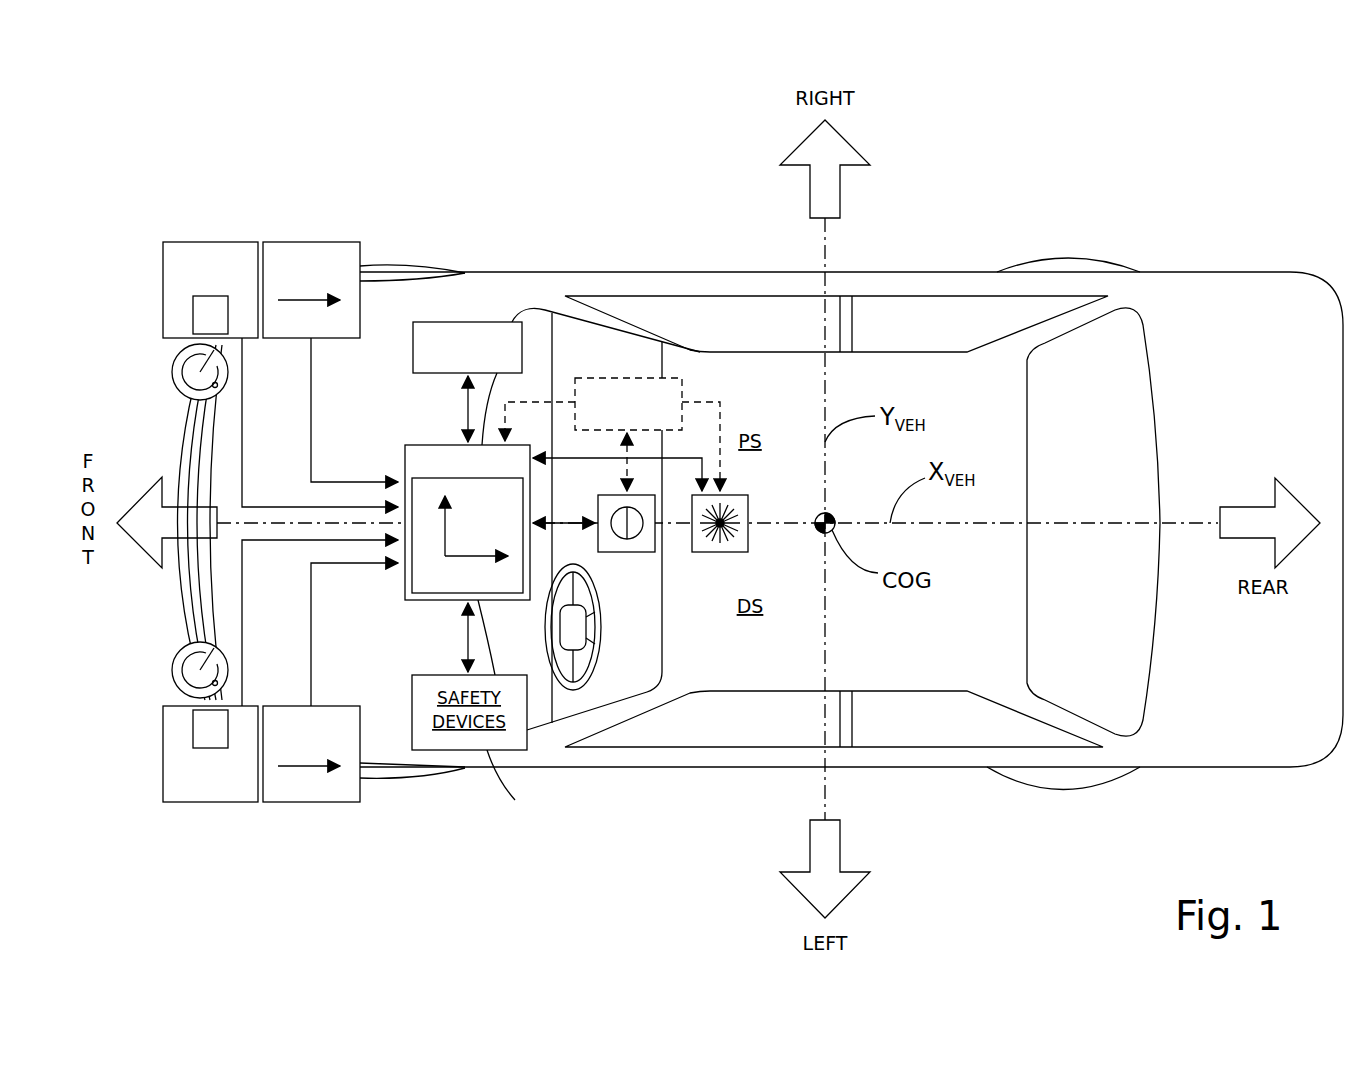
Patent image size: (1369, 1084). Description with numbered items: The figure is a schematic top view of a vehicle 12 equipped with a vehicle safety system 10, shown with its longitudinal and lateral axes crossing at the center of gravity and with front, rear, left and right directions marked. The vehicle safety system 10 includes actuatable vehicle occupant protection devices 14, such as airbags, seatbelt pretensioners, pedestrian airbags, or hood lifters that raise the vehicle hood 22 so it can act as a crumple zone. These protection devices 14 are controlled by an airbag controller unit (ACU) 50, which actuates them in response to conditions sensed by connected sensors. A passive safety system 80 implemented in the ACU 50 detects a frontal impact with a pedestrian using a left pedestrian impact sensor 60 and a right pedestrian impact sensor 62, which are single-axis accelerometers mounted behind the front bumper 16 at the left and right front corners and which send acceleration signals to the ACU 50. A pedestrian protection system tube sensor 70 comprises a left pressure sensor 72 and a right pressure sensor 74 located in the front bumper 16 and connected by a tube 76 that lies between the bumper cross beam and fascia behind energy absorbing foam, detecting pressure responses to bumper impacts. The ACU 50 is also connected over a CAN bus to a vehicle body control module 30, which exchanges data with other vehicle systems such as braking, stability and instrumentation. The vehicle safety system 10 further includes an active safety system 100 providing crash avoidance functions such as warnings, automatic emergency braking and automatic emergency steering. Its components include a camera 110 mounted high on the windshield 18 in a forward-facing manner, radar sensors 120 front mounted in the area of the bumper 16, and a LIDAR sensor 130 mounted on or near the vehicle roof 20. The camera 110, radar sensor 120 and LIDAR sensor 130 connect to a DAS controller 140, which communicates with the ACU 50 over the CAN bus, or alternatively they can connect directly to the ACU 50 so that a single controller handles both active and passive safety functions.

The vehicle safety system 10 is at (455, 235).
The vehicle 12 is at (345, 135).
The actuatable vehicle occupant protection devices 14 is at (512, 600).
The front bumper 16 is at (175, 450).
The windshield 18 is at (578, 358).
The vehicle roof 20 is at (915, 368).
The vehicle hood 22 is at (283, 572).
The vehicle body control module (BCM) 30 is at (475, 326).
The airbag controller unit (ACU) 50 is at (427, 447).
The left pedestrian impact sensor (PIS_LX) 60 is at (305, 785).
The right pedestrian impact sensor (PIS_RX) 62 is at (295, 245).
The pedestrian protection system (PPS) tube sensor 70 is at (223, 808).
The left pressure sensor (PIS_LP) 72 is at (205, 730).
The right pressure sensor (PIS_RP) 74 is at (205, 318).
The tube 76 is at (192, 480).
The passive safety system 80 is at (396, 292).
The active safety system 100 is at (642, 350).
The camera 110 is at (640, 555).
The radar sensor 120 is at (175, 352).
The laser radar (LIDAR) sensor 130 is at (730, 552).
The DAS controller 140 is at (650, 378).